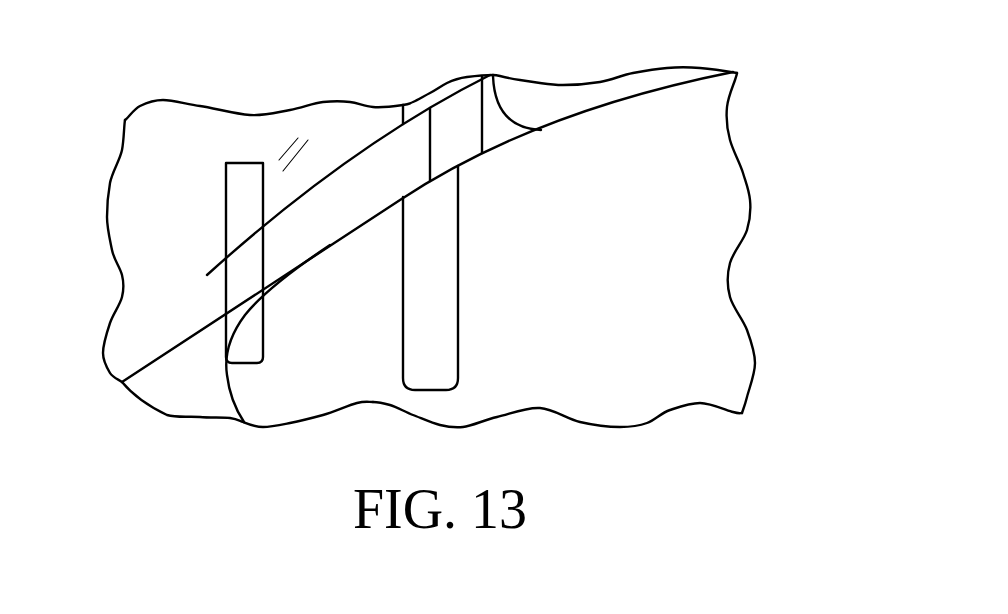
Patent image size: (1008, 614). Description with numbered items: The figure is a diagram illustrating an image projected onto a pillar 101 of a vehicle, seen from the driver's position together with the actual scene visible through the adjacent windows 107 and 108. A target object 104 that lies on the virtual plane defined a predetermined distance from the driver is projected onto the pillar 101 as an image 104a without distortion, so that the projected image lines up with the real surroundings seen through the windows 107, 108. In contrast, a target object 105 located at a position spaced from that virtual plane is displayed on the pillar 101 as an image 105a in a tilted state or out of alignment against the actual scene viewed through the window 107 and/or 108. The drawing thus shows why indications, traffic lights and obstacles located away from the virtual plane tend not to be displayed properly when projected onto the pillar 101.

The pillar 101 is at (328, 170).
The target object 104 is at (295, 292).
The image 104a is at (263, 260).
The target object 105 is at (427, 194).
The image 105a is at (430, 142).
The window 107 is at (125, 121).
The window 108 is at (743, 171).